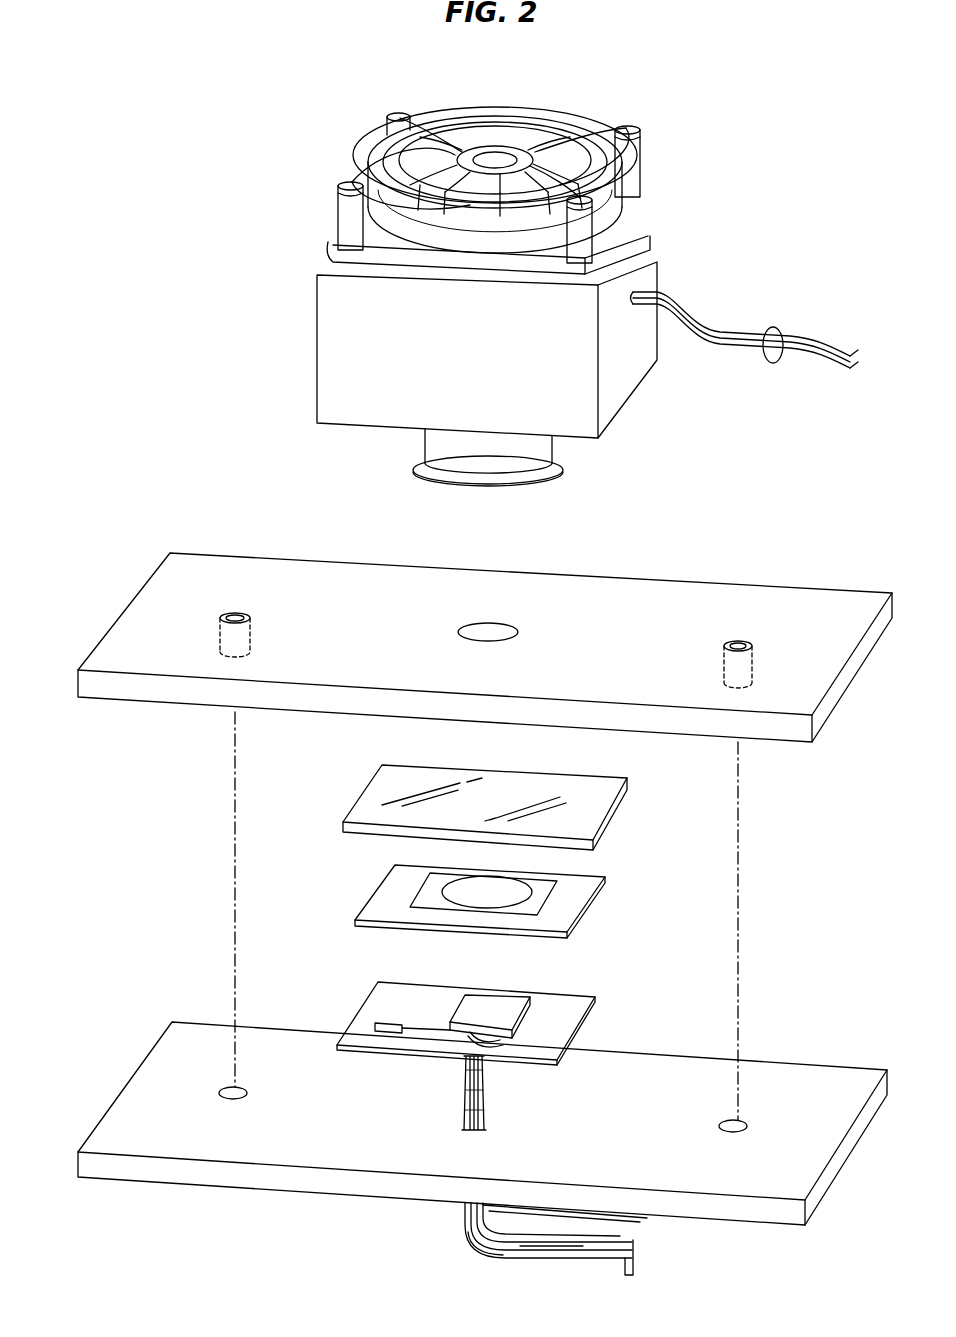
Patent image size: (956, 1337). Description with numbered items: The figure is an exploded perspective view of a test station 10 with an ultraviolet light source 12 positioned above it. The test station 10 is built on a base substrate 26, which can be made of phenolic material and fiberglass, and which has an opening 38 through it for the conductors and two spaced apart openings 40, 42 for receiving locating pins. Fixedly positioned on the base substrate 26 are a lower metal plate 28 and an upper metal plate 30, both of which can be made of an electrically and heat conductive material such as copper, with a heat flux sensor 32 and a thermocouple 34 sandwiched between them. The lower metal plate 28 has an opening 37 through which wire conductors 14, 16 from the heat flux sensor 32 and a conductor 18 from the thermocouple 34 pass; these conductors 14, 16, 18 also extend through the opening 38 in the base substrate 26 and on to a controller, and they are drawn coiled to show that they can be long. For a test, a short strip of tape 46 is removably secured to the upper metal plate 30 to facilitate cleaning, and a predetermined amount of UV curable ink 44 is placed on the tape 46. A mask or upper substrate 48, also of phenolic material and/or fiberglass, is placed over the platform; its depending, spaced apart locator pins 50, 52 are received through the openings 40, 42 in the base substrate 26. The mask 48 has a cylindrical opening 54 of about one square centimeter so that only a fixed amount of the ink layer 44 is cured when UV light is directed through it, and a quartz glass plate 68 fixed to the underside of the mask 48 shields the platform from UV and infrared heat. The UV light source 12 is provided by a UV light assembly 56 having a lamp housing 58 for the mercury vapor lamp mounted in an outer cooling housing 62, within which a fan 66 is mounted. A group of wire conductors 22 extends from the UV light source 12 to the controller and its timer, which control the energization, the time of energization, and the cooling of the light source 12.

The test station 10 is at (87, 712).
The ultraviolet (UV) light source 12 is at (212, 268).
The wire conductor 14 is at (647, 1218).
The wire conductor 16 is at (583, 1245).
The wire conductor 18 is at (503, 1255).
The group of wire conductors 22 is at (783, 333).
The base substrate 26 is at (835, 1080).
The lower metal plate 28 is at (395, 1003).
The upper metal plate 30 is at (375, 916).
The heat flux sensor 32 is at (515, 1003).
The thermocouple 34 is at (380, 1035).
The opening 37 is at (487, 1042).
The opening 38 is at (485, 1130).
The opening 40 is at (230, 1090).
The opening 42 is at (745, 1124).
The layer of UV curable ink 44 is at (510, 888).
The strip of tape 46 is at (425, 895).
The mask or upper substrate 48 is at (676, 600).
The locator pin 50 is at (222, 648).
The locator pin 52 is at (752, 682).
The cylindrical opening 54 is at (508, 628).
The UV light assembly 56 is at (338, 134).
The lamp housing 58 is at (410, 445).
The outer cooling housing 62 is at (318, 272).
The fan 66 is at (545, 145).
The quartz glass plate 68 is at (622, 800).